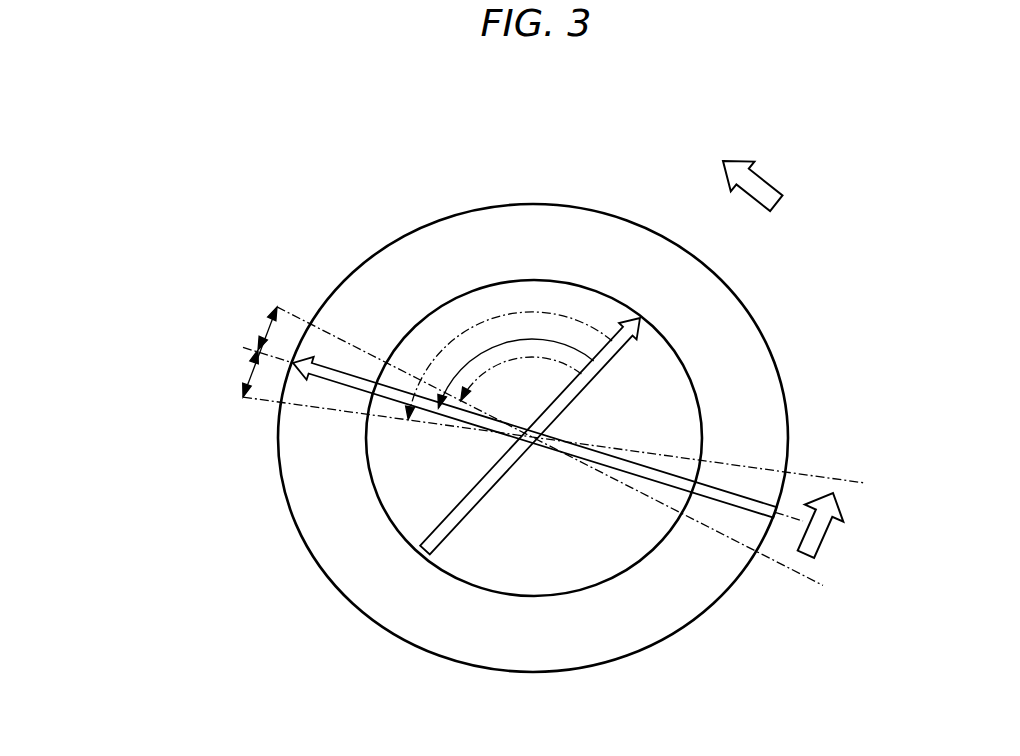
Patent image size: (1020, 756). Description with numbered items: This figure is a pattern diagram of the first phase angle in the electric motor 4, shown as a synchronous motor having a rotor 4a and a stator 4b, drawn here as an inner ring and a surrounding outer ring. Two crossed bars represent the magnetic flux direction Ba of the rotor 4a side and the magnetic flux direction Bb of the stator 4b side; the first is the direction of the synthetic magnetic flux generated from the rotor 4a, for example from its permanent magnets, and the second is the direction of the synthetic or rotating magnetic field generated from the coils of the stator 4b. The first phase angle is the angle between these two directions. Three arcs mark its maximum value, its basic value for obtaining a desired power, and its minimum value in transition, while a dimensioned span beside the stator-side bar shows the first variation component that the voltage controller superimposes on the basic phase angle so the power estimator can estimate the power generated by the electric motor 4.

The electric motor 4 is at (200, 200).
The rotor 4a is at (373, 488).
The stator 4b is at (299, 530).
The magnetic flux direction of the rotor side Ba is at (618, 348).
The magnetic flux direction of the stator side Bb is at (342, 384).